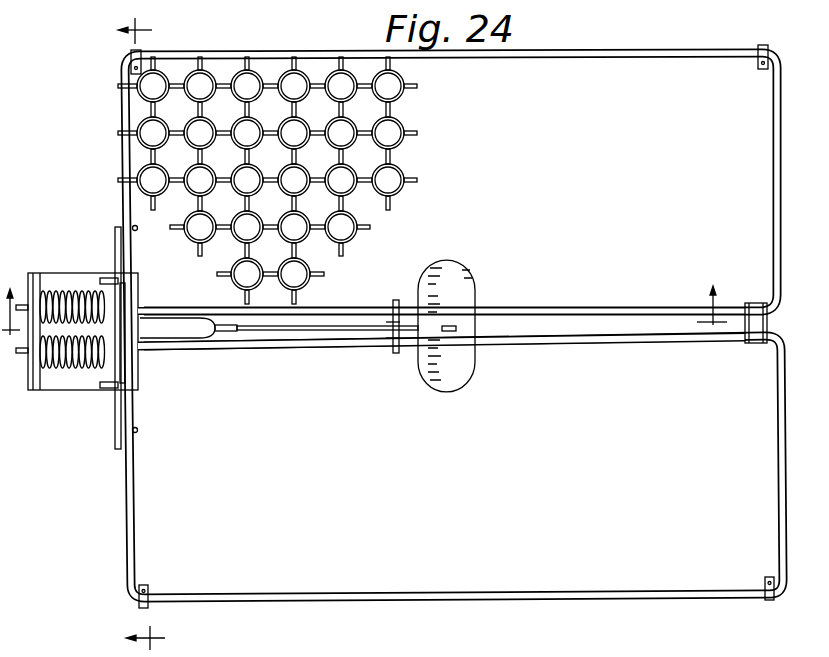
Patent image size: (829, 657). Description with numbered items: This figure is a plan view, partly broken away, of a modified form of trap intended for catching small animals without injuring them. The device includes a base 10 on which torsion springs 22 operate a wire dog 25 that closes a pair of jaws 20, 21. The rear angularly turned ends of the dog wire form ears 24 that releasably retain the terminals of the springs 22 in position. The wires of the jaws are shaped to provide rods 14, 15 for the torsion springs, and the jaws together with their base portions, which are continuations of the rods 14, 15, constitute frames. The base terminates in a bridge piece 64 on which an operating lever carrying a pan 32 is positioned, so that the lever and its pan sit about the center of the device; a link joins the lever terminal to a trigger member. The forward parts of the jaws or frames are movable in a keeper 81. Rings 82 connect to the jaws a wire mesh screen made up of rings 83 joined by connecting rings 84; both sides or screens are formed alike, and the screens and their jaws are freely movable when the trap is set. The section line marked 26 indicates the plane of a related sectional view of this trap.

The base 10 is at (80, 390).
The rod 14 is at (26, 354).
The rod 15 is at (143, 312).
The jaw 20 is at (454, 326).
The jaw 21 is at (580, 52).
The torsion springs 22 is at (62, 290).
The ears 24 is at (113, 268).
The wire dog 25 is at (163, 345).
The section line 26 is at (121, 335).
The pan 32 is at (466, 380).
The bridge piece 64 is at (395, 300).
The keeper 81 is at (755, 343).
The rings 82 is at (293, 57).
The rings 83 is at (393, 96).
The connecting rings 84 is at (218, 82).